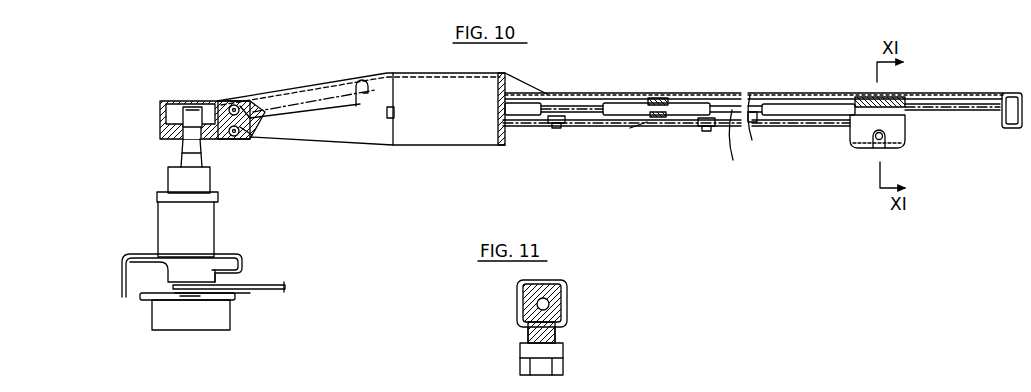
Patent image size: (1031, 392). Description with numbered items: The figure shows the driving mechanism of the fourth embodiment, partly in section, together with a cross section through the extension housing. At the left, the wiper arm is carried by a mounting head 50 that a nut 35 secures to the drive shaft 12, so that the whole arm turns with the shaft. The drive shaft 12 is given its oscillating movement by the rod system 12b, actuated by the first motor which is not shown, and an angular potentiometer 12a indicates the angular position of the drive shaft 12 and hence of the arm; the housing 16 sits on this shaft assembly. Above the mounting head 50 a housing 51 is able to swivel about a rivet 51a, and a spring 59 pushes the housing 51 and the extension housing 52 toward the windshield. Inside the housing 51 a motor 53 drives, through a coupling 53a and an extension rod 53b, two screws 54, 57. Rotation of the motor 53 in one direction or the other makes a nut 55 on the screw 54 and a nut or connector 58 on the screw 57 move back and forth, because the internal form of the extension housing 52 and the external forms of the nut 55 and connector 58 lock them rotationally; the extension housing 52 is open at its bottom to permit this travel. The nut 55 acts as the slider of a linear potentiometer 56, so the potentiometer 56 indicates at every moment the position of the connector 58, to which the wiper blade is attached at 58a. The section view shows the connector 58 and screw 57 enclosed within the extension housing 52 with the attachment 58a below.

In FIG. 10, the mounting head 50 is at (163, 101).
In FIG. 10, the nut 35 is at (188, 106).
In FIG. 10, the drive shaft 12 is at (205, 106).
In FIG. 10, the angular potentiometer 12a is at (225, 318).
In FIG. 10, the rod system 12b is at (272, 285).
In FIG. 10, the housing 16 is at (210, 218).
In FIG. 10, the housing 51 is at (275, 93).
In FIG. 10, the rivet 51a is at (238, 131).
In FIG. 10, the spring 59 is at (310, 88).
In FIG. 10, the motor 53 is at (437, 90).
In FIG. 10, the coupling 53a is at (529, 110).
In FIG. 10, the extension rod 53b is at (580, 112).
In FIG. 10, the screw 54 is at (611, 103).
In FIG. 10, the nut 55 is at (656, 97).
In FIG. 10, the potentiometer 56 is at (624, 128).
In FIG. 10, the extension housing 52 is at (700, 92).
In FIG. 11, the extension housing 52 is at (570, 290).
In FIG. 10, the screw 57 is at (858, 108).
In FIG. 11, the screw 57 is at (565, 305).
In FIG. 10, the connector 58 is at (862, 126).
In FIG. 11, the connector 58 is at (525, 330).
In FIG. 10, the wiper blade attachment 58a is at (878, 142).
In FIG. 11, the wiper blade attachment 58a is at (558, 352).